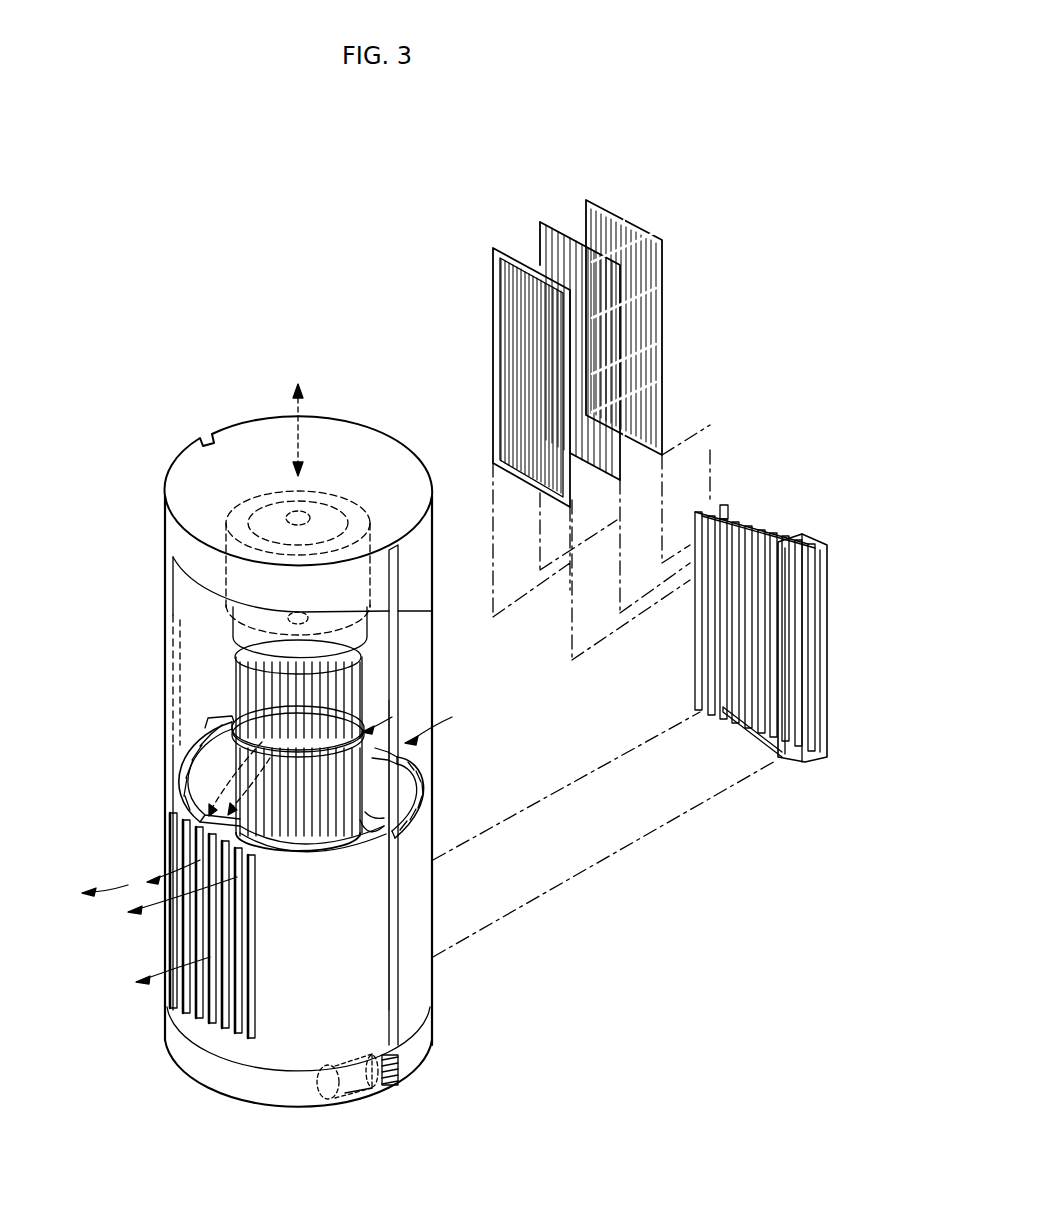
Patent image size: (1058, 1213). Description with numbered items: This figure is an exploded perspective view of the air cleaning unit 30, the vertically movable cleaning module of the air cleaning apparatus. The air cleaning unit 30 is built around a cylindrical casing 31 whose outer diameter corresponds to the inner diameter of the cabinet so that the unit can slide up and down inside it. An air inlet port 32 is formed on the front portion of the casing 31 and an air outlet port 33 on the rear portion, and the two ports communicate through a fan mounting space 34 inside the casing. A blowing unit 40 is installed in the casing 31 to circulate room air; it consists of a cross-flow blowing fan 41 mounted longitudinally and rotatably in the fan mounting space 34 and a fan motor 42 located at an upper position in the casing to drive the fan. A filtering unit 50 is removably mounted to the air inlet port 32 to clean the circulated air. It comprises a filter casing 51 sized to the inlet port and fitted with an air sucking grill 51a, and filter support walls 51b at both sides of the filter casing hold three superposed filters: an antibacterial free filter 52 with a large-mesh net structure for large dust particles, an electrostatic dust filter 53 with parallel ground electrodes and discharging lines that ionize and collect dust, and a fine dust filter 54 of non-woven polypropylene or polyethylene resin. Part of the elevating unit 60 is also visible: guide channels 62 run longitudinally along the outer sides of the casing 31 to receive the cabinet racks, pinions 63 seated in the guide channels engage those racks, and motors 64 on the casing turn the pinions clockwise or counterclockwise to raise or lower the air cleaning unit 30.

The air cleaning unit 30 is at (162, 567).
The casing 31 is at (192, 752).
The air inlet port 32 is at (410, 748).
The air outlet port 33 is at (178, 818).
The fan mounting space 34 is at (396, 790).
The blowing unit 40 is at (261, 492).
The cross-flow blowing fan 41 is at (286, 649).
The fan motor 42 is at (232, 520).
The filtering unit 50 is at (832, 549).
The filter casing 51 is at (820, 650).
The air sucking grill 51a is at (745, 500).
The filter support walls 51b is at (703, 665).
The antibacterial free filter 52 is at (602, 202).
The electrostatic dust filter 53 is at (555, 224).
The fine dust filter 54 is at (510, 250).
The elevating unit 60 is at (327, 1057).
The guide channels 62 is at (205, 733).
The pinions 63 is at (400, 1082).
The motors 64 is at (352, 1094).